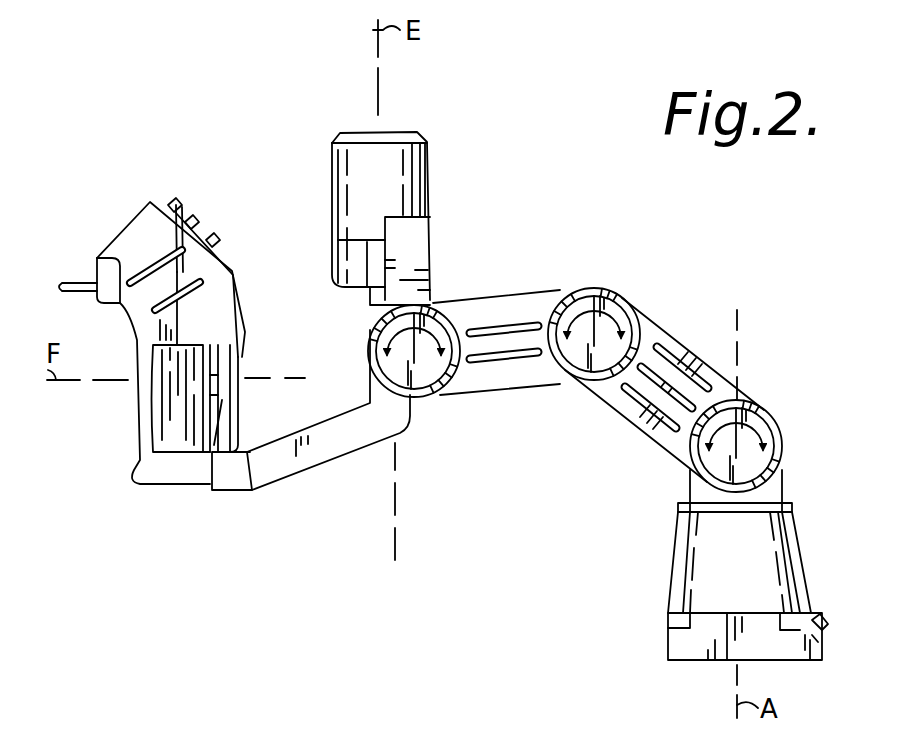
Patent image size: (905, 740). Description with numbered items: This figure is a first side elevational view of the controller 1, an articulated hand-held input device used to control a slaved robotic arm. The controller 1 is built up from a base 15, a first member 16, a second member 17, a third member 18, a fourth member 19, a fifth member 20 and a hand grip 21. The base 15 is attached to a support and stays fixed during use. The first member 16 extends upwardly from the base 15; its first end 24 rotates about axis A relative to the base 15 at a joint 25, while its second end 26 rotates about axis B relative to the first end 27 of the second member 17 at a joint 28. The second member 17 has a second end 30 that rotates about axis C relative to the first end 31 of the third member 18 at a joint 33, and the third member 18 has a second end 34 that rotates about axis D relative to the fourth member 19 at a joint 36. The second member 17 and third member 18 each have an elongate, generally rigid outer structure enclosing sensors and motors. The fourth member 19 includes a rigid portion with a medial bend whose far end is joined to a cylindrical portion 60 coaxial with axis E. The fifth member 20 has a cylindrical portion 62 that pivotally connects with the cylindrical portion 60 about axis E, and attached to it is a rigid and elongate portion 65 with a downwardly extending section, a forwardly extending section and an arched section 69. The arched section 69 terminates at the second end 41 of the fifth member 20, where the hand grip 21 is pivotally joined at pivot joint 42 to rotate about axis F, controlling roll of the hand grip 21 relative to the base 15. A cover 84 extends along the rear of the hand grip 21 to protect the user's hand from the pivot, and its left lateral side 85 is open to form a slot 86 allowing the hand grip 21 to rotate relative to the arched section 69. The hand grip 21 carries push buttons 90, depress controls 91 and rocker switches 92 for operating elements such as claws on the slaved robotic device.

The controller 1 is at (812, 372).
The base 15 is at (668, 646).
The first member 16 is at (800, 525).
The second member 17 is at (640, 440).
The third member 18 is at (476, 398).
The fourth member 19 is at (432, 243).
The fifth member 20 is at (310, 460).
The hand grip 21 is at (138, 422).
The first end 24 is at (815, 614).
The joint 25 is at (664, 609).
The second end 26 is at (786, 455).
The first end 27 is at (750, 406).
The joint 28 is at (716, 460).
The second end 30 is at (630, 314).
The first end 31 is at (586, 292).
The joint 33 is at (592, 360).
The second end 34 is at (428, 402).
The joint 36 is at (400, 352).
The second end 41 is at (232, 394).
The pivot joint 42 is at (244, 358).
The cylindrical portion 60 is at (432, 168).
The cylindrical portion 62 is at (350, 285).
The rigid and elongate portion 65 is at (290, 478).
The arched section 69 is at (228, 430).
The cover 84 is at (230, 470).
The left lateral side 85 is at (240, 298).
The slot 86 is at (195, 470).
The push buttons 90 is at (192, 217).
The depress controls 91 is at (62, 282).
The rocker switches 92 is at (222, 238).